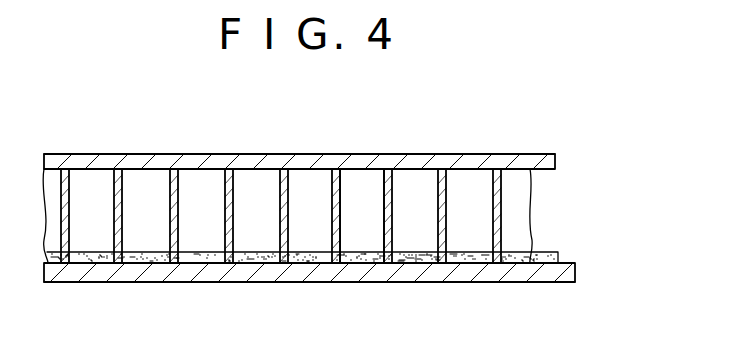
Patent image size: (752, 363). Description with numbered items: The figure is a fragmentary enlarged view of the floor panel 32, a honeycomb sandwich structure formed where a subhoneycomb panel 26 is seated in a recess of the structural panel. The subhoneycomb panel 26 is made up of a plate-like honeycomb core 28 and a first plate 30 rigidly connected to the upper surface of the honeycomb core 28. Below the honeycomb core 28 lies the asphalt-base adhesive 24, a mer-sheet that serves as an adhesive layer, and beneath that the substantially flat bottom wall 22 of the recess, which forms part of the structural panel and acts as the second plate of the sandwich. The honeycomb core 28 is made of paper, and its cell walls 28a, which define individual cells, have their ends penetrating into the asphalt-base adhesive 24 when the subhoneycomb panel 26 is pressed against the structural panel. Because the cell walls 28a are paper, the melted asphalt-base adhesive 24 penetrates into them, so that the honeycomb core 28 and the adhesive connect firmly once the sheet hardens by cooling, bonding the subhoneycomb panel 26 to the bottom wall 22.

The bottom wall 22 is at (144, 283).
The asphalt-base adhesive 24 is at (562, 259).
The subhoneycomb panel 26 is at (224, 146).
The honeycomb core 28 is at (347, 194).
The cell walls 28a is at (290, 225).
The first plate 30 is at (474, 154).
The floor panel 32 is at (501, 290).